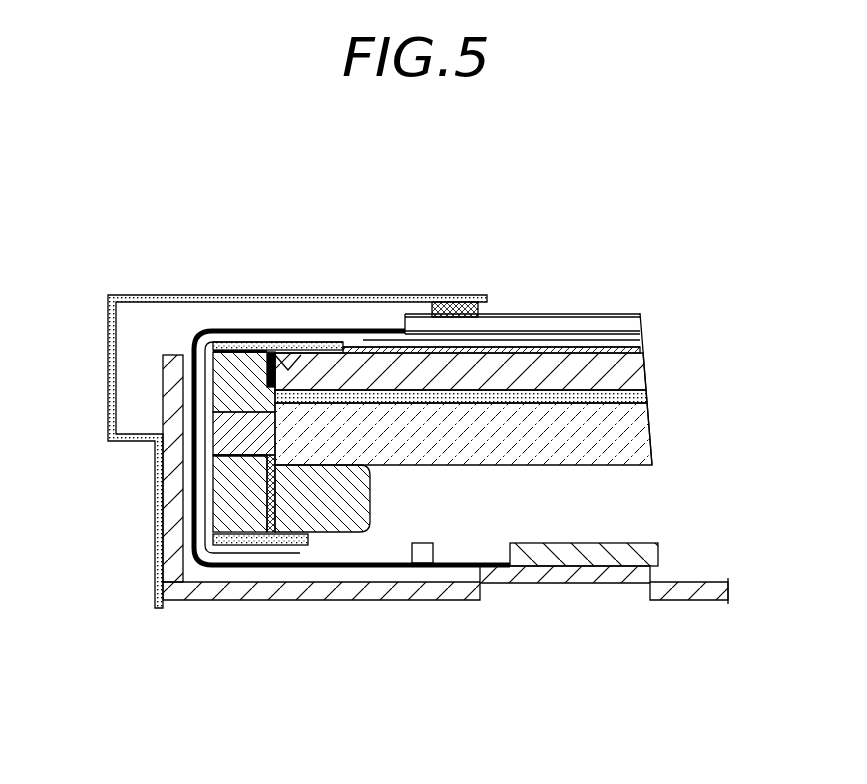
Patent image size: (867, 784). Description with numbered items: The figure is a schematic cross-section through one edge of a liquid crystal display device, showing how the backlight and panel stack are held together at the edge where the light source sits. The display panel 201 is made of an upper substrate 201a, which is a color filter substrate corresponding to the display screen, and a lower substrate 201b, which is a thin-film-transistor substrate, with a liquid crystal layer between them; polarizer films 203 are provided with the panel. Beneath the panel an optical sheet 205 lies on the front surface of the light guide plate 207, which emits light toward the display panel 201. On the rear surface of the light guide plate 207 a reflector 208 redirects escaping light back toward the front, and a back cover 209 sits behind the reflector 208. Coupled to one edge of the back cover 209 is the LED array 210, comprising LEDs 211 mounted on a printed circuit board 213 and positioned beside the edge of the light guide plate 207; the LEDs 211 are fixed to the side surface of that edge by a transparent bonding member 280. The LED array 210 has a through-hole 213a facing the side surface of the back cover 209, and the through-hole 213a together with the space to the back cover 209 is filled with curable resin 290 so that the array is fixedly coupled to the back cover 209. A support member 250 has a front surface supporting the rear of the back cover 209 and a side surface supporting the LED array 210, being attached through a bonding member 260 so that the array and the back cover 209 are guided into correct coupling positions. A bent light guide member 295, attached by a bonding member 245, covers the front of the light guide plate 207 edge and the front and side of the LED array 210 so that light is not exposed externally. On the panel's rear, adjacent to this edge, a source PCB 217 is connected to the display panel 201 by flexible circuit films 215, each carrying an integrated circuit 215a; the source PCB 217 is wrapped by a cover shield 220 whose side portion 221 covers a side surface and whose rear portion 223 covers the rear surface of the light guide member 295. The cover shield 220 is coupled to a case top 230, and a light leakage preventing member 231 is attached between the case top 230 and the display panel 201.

The display panel 201 is at (574, 339).
The upper substrate 201a is at (632, 323).
The lower substrate 201b is at (632, 338).
The polarizer films 203 is at (560, 345).
The optical sheet 205 is at (580, 349).
The light guide plate 207 is at (630, 367).
The reflector 208 is at (630, 397).
The back cover 209 is at (630, 437).
The LED array 210 is at (170, 453).
The LEDs 211 is at (300, 373).
The printed circuit board 213 is at (228, 475).
The through-hole 213a is at (240, 456).
The flexible circuit films 215 is at (238, 330).
The integrated circuit 215a is at (417, 562).
The source PCB 217 is at (652, 557).
The cover shield 220 is at (445, 553).
The side portion 221 is at (172, 550).
The rear portion 223 is at (227, 590).
The case top 230 is at (193, 297).
The light leakage preventing member 231 is at (441, 301).
The bonding member 245 is at (230, 351).
The support member 250 is at (360, 510).
The bonding member 260 is at (272, 536).
The transparent bonding member 280 is at (270, 351).
The curable resin 290 is at (303, 430).
The light guide member 295 is at (210, 387).